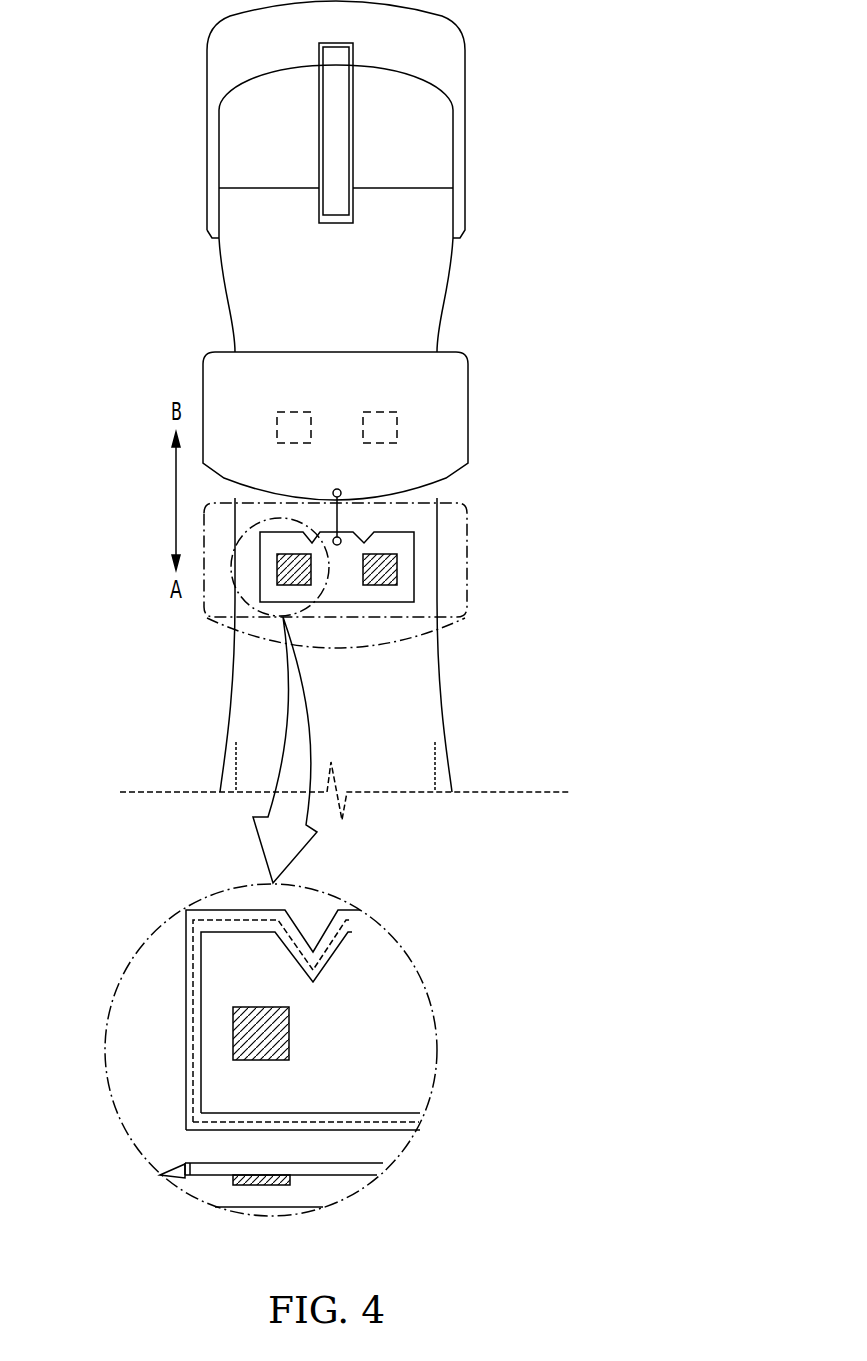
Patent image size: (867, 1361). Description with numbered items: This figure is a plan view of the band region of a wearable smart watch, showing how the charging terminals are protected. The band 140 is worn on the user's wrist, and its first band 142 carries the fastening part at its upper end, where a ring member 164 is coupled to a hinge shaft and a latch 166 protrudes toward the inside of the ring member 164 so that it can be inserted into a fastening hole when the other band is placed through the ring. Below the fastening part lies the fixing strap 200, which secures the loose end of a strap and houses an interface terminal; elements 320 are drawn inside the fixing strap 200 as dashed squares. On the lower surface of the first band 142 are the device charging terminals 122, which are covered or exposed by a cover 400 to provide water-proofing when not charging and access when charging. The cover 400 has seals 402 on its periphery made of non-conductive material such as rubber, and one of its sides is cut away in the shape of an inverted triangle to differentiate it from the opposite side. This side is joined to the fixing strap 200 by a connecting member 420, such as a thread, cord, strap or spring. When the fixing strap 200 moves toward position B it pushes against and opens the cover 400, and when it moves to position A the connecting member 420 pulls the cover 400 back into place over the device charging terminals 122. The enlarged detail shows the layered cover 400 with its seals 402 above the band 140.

The device charging terminals 122 is at (382, 572).
The band 140 is at (325, 1193).
The first band 142 is at (258, 652).
The ring member 164 is at (452, 65).
The latch 166 is at (343, 122).
The fixing strap 200 is at (469, 351).
The sensor regions 320 is at (397, 428).
The cover 400 is at (383, 603).
The seals 402 is at (200, 1092).
The connecting member 420 is at (342, 517).